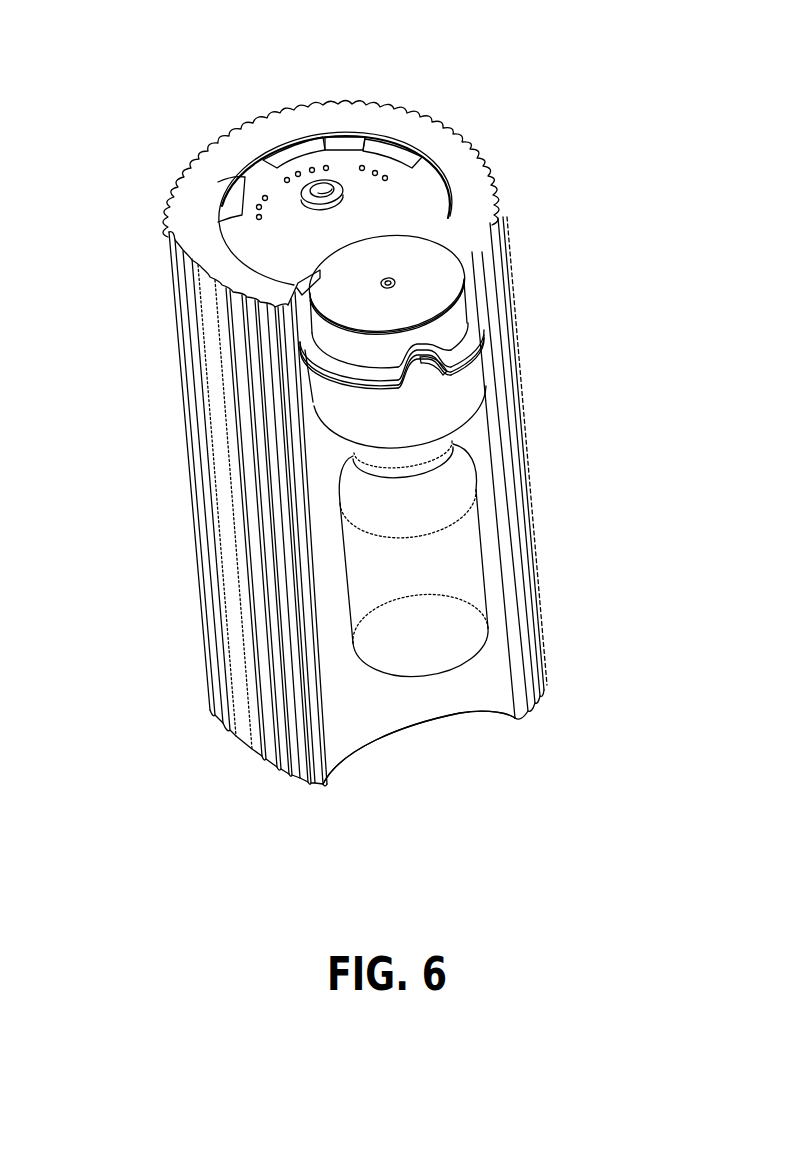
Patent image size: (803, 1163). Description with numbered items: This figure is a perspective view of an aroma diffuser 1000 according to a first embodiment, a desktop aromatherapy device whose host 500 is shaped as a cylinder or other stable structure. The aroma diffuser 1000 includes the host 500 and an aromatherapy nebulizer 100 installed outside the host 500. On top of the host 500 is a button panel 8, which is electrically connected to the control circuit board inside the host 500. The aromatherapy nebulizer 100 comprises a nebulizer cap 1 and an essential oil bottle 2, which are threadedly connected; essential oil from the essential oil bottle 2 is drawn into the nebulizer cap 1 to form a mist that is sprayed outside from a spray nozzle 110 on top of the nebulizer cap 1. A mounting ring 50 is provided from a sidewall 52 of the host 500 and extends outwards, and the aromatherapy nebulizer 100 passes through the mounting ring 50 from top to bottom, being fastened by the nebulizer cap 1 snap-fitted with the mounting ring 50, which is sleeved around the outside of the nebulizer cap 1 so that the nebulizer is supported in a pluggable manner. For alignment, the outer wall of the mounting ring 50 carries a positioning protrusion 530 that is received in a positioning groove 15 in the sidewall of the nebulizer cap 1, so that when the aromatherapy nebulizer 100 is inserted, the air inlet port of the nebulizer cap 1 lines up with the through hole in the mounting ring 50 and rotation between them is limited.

The aroma diffuser 1000 is at (167, 52).
The host 500 is at (193, 350).
The button panel 8 is at (332, 192).
The aromatherapy nebulizer 100 is at (583, 315).
The nebulizer cap 1 is at (436, 302).
The spray nozzle 110 is at (397, 280).
The positioning groove 15 is at (437, 352).
The positioning protrusion 530 is at (423, 374).
The essential oil bottle 2 is at (460, 597).
The mounting ring 50 is at (350, 410).
The sidewall 52 is at (382, 693).